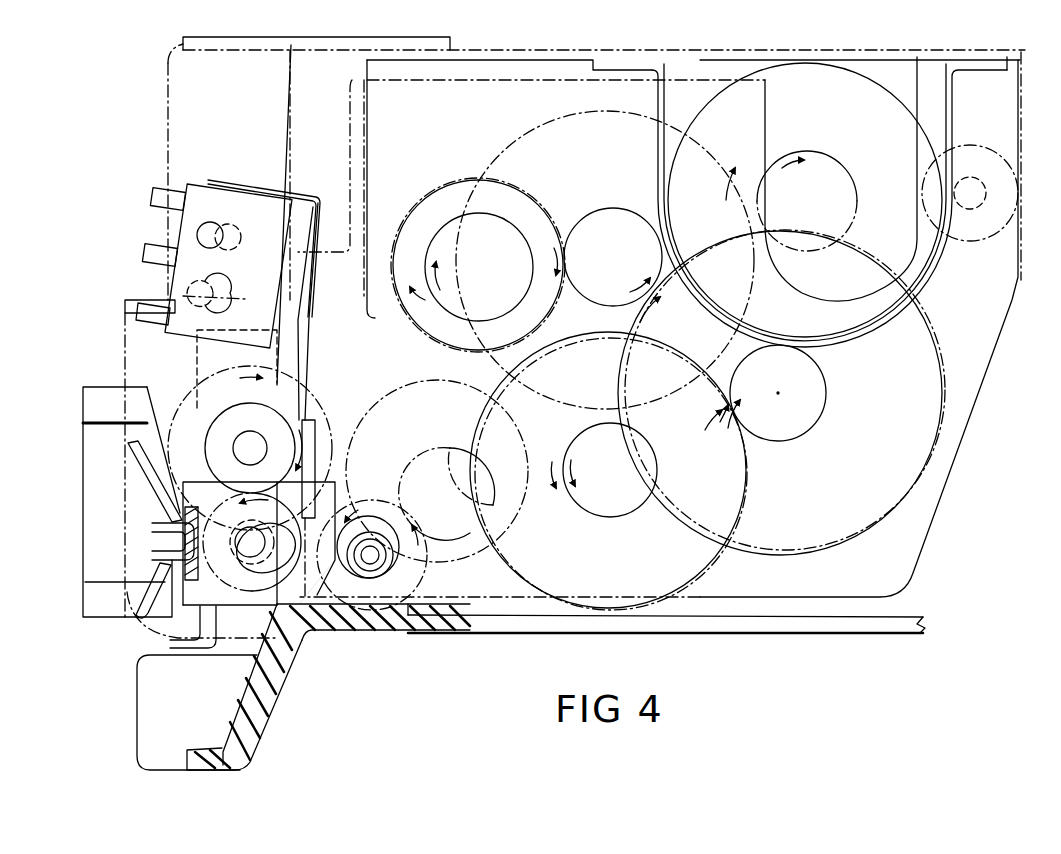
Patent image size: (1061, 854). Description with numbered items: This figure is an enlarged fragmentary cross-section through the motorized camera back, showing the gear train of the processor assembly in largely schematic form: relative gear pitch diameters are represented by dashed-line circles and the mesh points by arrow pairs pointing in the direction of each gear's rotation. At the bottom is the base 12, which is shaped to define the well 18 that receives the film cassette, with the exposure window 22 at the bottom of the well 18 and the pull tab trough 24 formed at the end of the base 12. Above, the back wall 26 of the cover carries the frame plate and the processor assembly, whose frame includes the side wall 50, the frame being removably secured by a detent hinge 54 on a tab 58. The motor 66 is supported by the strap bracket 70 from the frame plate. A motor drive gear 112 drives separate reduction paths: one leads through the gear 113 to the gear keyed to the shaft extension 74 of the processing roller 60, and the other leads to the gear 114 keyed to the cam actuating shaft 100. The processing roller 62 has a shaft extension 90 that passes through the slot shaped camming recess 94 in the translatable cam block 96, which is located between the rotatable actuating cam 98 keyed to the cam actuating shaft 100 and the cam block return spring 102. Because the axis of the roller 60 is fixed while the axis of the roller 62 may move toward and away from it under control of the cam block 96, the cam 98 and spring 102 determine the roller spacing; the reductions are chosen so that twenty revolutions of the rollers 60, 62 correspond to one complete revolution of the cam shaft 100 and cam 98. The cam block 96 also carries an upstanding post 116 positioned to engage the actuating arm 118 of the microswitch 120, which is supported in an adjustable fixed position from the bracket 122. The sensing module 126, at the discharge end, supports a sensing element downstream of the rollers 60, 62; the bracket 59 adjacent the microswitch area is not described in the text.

The base 12 is at (380, 616).
The well 18 is at (547, 613).
The exposure window 22 is at (762, 626).
The pull tab trough 24 is at (250, 690).
The back wall 26 is at (513, 58).
The side wall 50 is at (985, 313).
The detent hinge 54 is at (967, 194).
The tab 58 is at (1003, 108).
The bracket 59 is at (130, 298).
The processing roller 60 is at (241, 408).
The processing roller 62 is at (259, 543).
The motor 66 is at (814, 80).
The strap bracket 70 is at (633, 70).
The shaft extension 74 is at (250, 448).
The shaft extension 90 is at (252, 558).
The camming recess 94 is at (272, 563).
The cam block 96 is at (318, 605).
The actuating cam 98 is at (356, 514).
The cam actuating shaft 100 is at (376, 557).
The cam block return spring 102 is at (147, 502).
The motor drive gear 112 is at (802, 158).
The gear 113 is at (190, 392).
The gear 114 is at (427, 553).
The post 116 is at (312, 447).
The actuating arm 118 is at (303, 364).
The microswitch 120 is at (264, 276).
The bracket 122 is at (200, 133).
The sensing module 126 is at (106, 610).